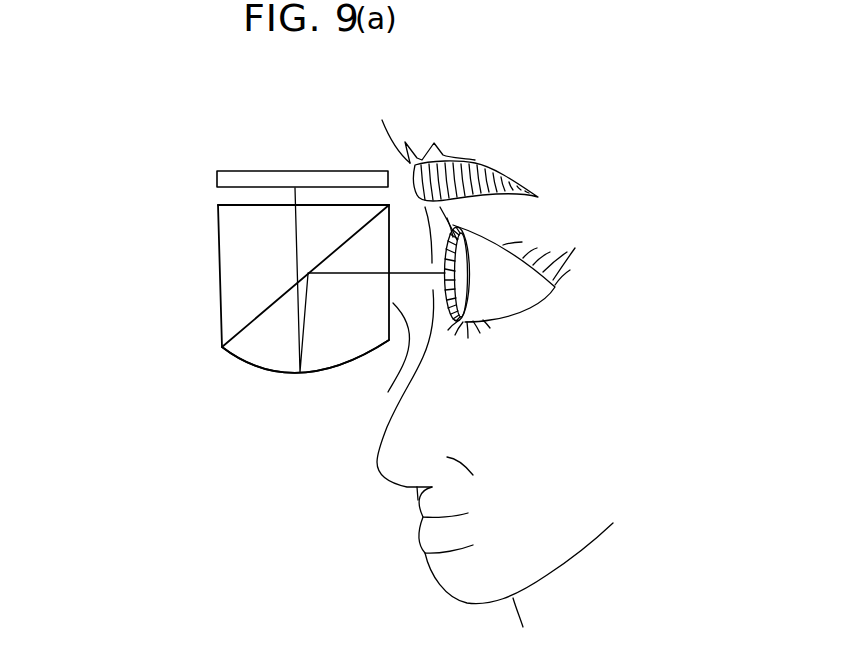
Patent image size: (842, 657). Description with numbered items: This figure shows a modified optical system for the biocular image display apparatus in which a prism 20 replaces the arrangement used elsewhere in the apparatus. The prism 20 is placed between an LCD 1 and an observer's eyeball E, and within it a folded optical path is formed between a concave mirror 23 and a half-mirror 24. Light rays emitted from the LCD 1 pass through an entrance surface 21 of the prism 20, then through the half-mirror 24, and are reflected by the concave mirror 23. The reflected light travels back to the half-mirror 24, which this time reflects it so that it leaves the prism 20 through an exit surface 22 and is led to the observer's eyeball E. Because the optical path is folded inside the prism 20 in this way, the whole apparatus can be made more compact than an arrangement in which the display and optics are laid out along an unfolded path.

The LCD 1 is at (227, 174).
The prism 20 is at (230, 255).
The entrance surface 21 is at (322, 205).
The exit surface 22 is at (388, 392).
The concave mirror 23 is at (272, 373).
The half-mirror 24 is at (253, 320).
The eyeball E is at (520, 297).